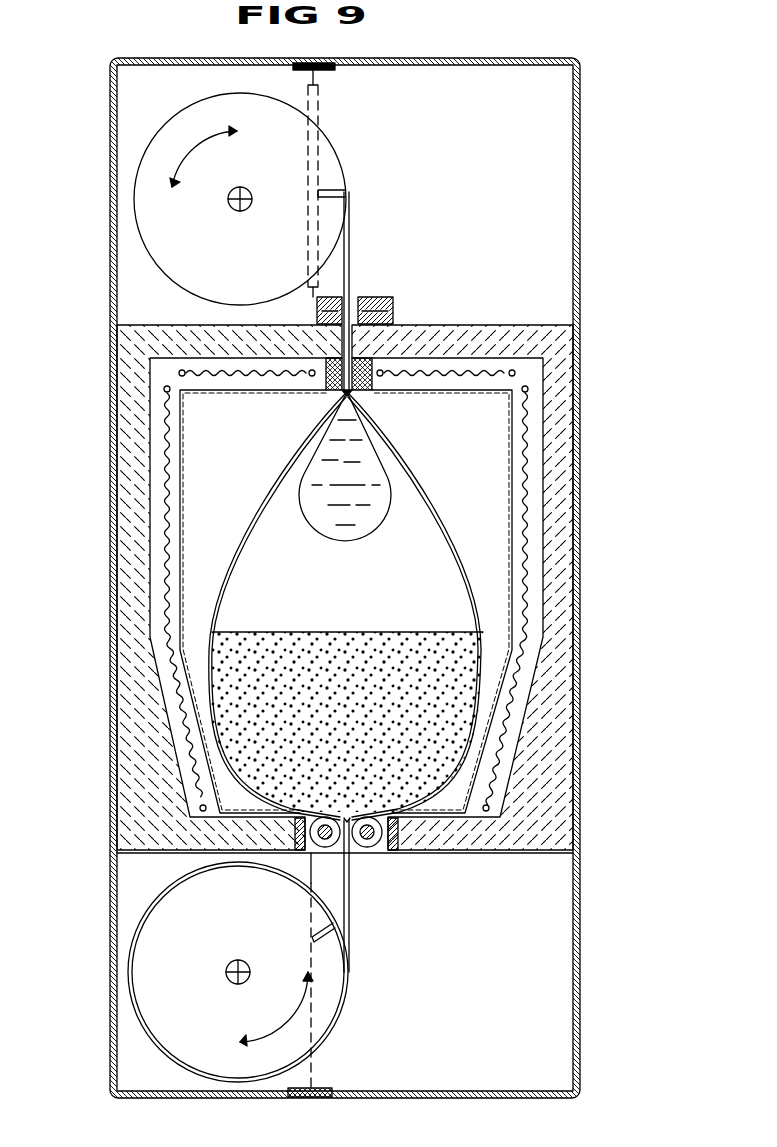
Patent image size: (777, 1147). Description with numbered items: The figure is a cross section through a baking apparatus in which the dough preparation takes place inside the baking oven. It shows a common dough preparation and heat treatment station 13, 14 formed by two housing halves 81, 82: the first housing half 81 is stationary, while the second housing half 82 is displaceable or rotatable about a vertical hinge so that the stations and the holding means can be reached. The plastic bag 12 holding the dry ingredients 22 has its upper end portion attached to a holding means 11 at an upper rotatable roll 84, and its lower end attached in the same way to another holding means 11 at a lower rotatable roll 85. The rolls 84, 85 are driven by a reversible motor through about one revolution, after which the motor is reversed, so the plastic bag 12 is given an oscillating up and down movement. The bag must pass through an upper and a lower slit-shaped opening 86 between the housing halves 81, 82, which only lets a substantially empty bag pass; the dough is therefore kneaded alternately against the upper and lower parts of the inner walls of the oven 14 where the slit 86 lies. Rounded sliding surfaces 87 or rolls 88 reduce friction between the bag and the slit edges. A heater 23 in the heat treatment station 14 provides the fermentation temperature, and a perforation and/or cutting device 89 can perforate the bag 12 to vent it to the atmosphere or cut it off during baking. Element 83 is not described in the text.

The holding means 11 is at (348, 190).
The plastic bag 12 is at (351, 259).
The dough preparation station 13 is at (433, 601).
The heat treatment station 14 is at (485, 437).
The dry ingredients 22 is at (359, 683).
The heater 23 is at (527, 520).
The first housing half 81 is at (132, 595).
The second housing half 82 is at (558, 560).
The web guide 83 is at (318, 96).
The upper rotatable roll 84 is at (318, 150).
The lower rotatable roll 85 is at (327, 990).
The slit-shaped opening 86 is at (344, 391).
The rounded sliding surfaces 87 is at (326, 378).
The rolls 88 is at (322, 826).
The perforation and/or cutting device 89 is at (386, 297).